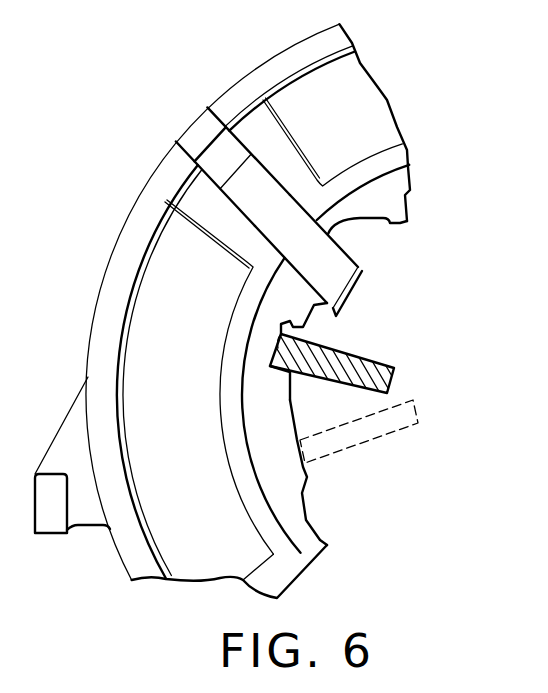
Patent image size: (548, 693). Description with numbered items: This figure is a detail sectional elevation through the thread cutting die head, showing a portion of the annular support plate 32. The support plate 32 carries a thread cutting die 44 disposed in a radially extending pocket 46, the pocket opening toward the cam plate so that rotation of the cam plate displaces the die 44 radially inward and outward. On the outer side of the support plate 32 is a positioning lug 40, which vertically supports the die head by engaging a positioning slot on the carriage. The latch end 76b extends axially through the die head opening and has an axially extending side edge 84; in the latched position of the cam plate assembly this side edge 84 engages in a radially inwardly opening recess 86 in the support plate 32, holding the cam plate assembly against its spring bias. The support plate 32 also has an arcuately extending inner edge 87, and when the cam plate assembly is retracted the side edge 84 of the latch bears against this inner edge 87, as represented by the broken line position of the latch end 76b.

The annular support plate 32 is at (190, 543).
The positioning lug 40 is at (48, 513).
The thread cutting die 44 is at (338, 270).
The radially extending pocket 46 is at (182, 148).
The end of latch 76b is at (341, 357).
The axially extending side edge 84 is at (270, 368).
The radially inwardly opening recess 86 is at (283, 323).
The arcuately extending inner edge 87 is at (290, 417).